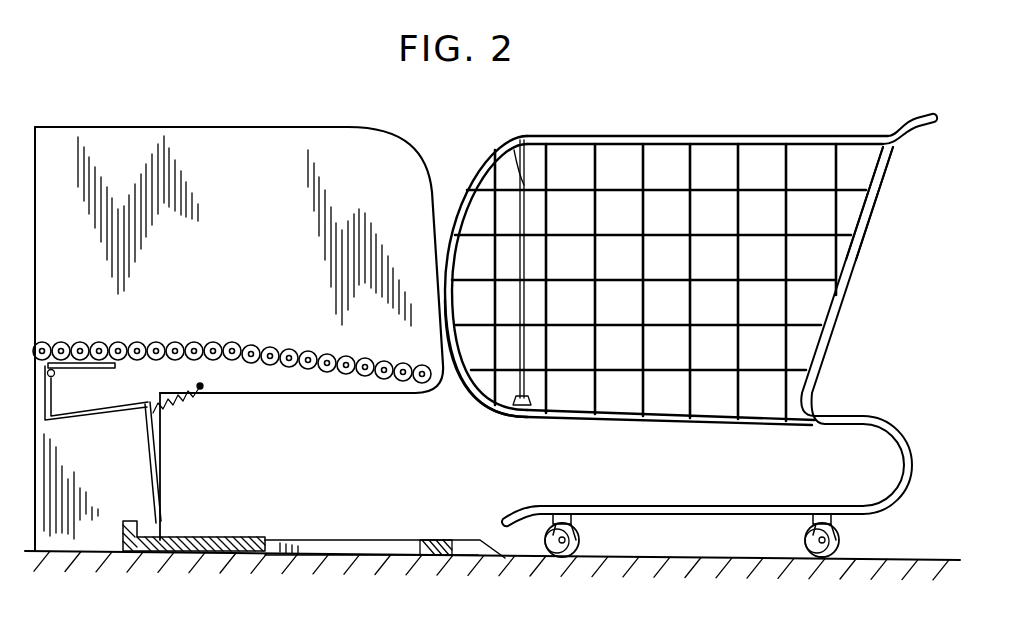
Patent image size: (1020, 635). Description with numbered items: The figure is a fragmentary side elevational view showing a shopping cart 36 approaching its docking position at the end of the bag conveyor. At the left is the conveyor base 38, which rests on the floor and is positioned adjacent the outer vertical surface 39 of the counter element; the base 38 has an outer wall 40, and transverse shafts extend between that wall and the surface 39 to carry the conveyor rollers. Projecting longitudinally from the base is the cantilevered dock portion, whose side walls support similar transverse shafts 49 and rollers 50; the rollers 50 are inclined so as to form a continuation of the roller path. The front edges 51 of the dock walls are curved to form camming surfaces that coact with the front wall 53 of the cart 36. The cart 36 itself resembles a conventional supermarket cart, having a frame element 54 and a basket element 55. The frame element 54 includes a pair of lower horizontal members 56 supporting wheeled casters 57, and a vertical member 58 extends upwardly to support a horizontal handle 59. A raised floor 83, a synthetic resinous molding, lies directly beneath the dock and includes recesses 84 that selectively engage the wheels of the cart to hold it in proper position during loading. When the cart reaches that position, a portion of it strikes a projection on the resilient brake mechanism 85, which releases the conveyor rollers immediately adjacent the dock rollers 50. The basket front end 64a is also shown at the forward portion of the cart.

The cart 36 is at (702, 118).
The base 38 is at (90, 550).
The outer vertical surface 39 is at (230, 476).
The outer wall 40 is at (132, 491).
The transverse shafts 49 is at (240, 348).
The rollers 50 is at (264, 353).
The front edges 51 is at (418, 163).
The front wall 53 is at (533, 256).
The frame element 54 is at (912, 482).
The basket element 55 is at (866, 232).
The lower horizontal members 56 is at (688, 507).
The wheeled casters 57 is at (574, 548).
The vertical member 58 is at (843, 355).
The horizontal handle 59 is at (930, 117).
The basket front end 64a is at (481, 400).
The raised floor 83 is at (312, 555).
The recesses 84 is at (216, 546).
The resilient brake mechanism 85 is at (75, 423).